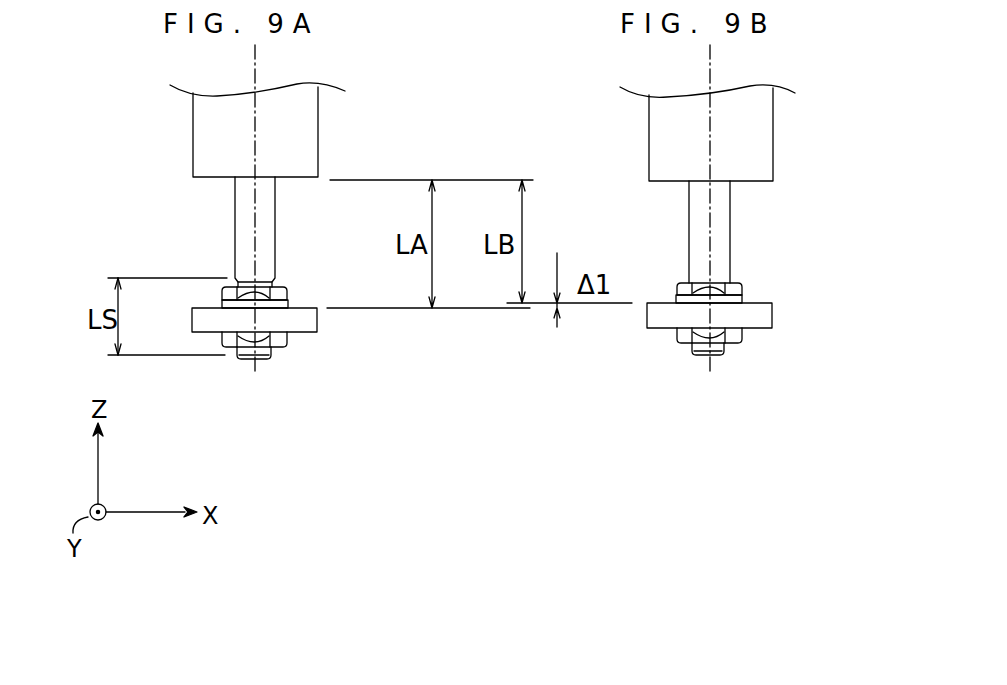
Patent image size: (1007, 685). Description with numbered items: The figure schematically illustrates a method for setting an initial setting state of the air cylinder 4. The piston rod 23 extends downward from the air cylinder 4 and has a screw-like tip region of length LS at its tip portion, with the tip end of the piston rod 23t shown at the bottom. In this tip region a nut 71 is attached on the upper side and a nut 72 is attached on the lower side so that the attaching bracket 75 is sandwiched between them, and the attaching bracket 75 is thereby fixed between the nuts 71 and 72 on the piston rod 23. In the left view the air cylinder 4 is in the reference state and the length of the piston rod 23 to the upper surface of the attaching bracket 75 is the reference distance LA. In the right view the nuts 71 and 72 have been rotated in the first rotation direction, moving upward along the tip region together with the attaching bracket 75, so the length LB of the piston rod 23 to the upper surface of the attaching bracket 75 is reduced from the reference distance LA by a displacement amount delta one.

In FIG. 9A, the air cylinder 4 is at (318, 132).
In FIG. 9B, the air cylinder 4 is at (773, 130).
In FIG. 9A, the piston rod 23 is at (277, 218).
In FIG. 9B, the piston rod 23 is at (732, 215).
In FIG. 9A, the tip end of bolt 23t is at (263, 357).
In FIG. 9B, the tip end of bolt 23t is at (716, 353).
In FIG. 9A, the nut 71 is at (288, 291).
In FIG. 9B, the nut 71 is at (745, 290).
In FIG. 9A, the nut 72 is at (287, 340).
In FIG. 9B, the nut 72 is at (743, 336).
In FIG. 9A, the attaching bracket 75 is at (318, 324).
In FIG. 9B, the attaching bracket 75 is at (773, 320).